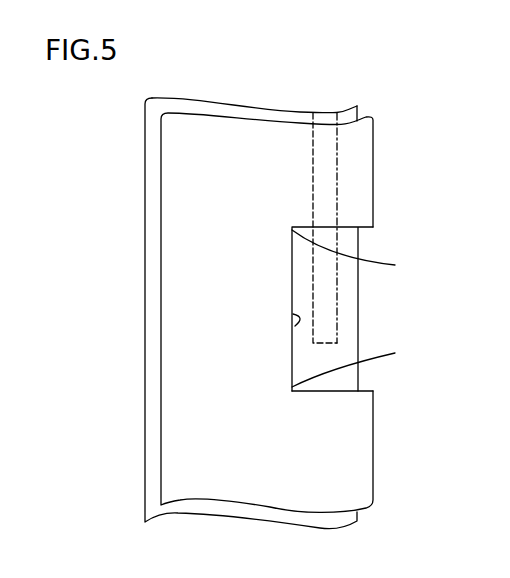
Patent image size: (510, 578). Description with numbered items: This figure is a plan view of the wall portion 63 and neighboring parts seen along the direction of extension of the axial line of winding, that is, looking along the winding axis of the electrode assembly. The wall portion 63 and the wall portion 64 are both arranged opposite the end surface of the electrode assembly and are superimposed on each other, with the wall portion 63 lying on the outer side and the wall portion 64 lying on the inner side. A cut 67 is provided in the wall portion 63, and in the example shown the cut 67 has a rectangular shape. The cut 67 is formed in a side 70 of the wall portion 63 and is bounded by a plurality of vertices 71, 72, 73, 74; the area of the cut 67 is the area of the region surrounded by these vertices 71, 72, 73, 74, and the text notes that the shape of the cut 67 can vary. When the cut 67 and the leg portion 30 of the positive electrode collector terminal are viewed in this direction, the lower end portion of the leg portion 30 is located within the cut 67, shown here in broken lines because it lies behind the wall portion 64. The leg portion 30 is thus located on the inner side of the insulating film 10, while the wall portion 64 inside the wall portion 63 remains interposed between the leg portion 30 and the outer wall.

The insulating film 10 is at (393, 106).
The wall portion 63 is at (178, 192).
The wall portion 64 is at (253, 108).
The cut 67 is at (292, 315).
The side 70 is at (373, 163).
The vertex 71 is at (373, 228).
The vertex 72 is at (373, 390).
The vertex 73 is at (358, 364).
The vertex 74 is at (358, 253).
The leg portion 30 is at (338, 305).